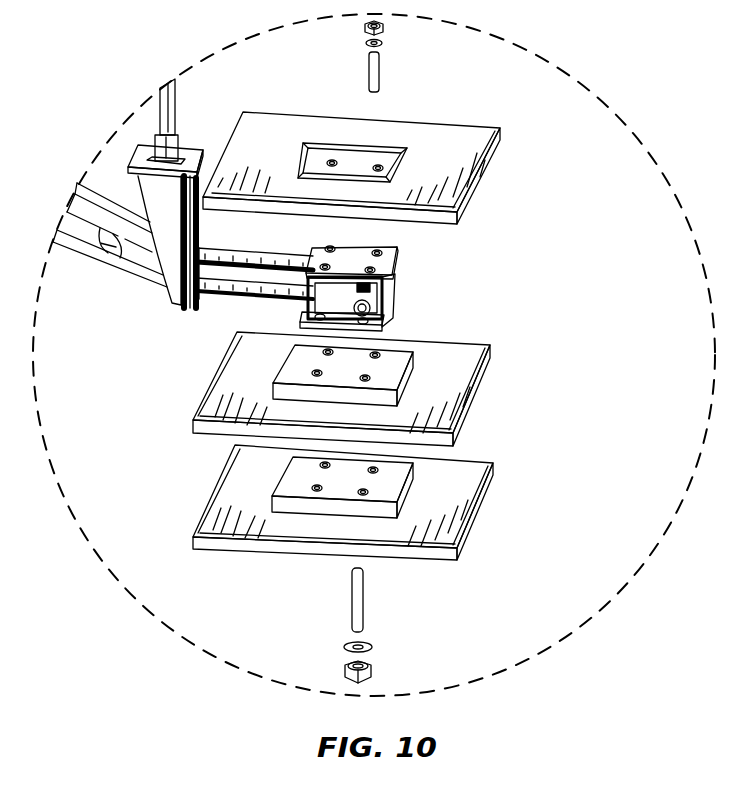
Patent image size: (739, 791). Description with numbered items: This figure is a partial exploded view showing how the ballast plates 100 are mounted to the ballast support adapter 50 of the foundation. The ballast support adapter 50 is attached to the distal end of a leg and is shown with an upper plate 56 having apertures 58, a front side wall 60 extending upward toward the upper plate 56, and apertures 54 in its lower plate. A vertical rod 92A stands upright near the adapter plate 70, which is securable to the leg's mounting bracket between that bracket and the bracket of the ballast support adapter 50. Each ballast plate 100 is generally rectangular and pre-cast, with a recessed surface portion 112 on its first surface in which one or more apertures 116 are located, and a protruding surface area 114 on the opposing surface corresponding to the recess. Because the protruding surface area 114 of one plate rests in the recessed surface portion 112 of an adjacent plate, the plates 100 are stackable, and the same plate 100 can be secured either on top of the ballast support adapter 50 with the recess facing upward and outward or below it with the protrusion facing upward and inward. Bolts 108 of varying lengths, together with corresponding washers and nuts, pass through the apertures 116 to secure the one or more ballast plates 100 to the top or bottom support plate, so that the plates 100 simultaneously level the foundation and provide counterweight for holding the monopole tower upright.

The rod 92A is at (157, 115).
The adapter plate 70 is at (195, 156).
The apertures 54 is at (187, 310).
The upper plate 56 is at (213, 283).
The ballast support adapter 50 is at (387, 273).
The apertures 58 is at (345, 252).
The front side wall 60 is at (347, 316).
The ballast plate 100 is at (478, 176).
The recessed surface portion 112 is at (370, 165).
The protruding surface area 114 is at (390, 368).
The apertures 116 is at (330, 157).
The bolts 108 is at (403, 69).